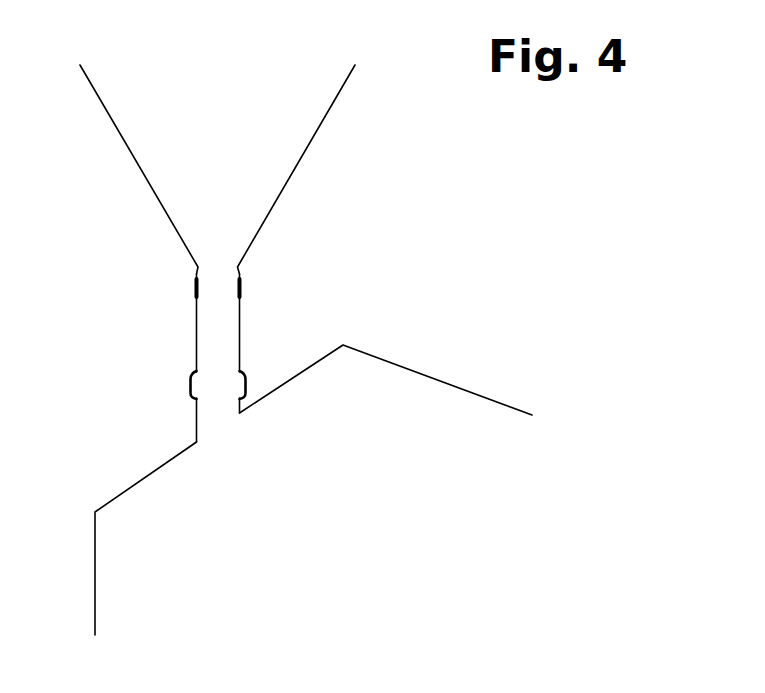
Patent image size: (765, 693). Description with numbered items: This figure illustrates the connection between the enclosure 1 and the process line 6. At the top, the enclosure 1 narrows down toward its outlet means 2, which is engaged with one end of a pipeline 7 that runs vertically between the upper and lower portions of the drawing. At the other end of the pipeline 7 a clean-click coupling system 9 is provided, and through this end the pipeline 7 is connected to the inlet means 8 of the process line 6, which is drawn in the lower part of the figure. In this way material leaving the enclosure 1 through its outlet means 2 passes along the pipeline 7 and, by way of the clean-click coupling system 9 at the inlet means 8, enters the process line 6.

The enclosure 1 is at (217, 169).
The outlet means 2 is at (195, 285).
The process line 6 is at (313, 490).
The pipeline 7 is at (218, 358).
The inlet means 8 is at (195, 417).
The clean-click coupling system 9 is at (256, 375).